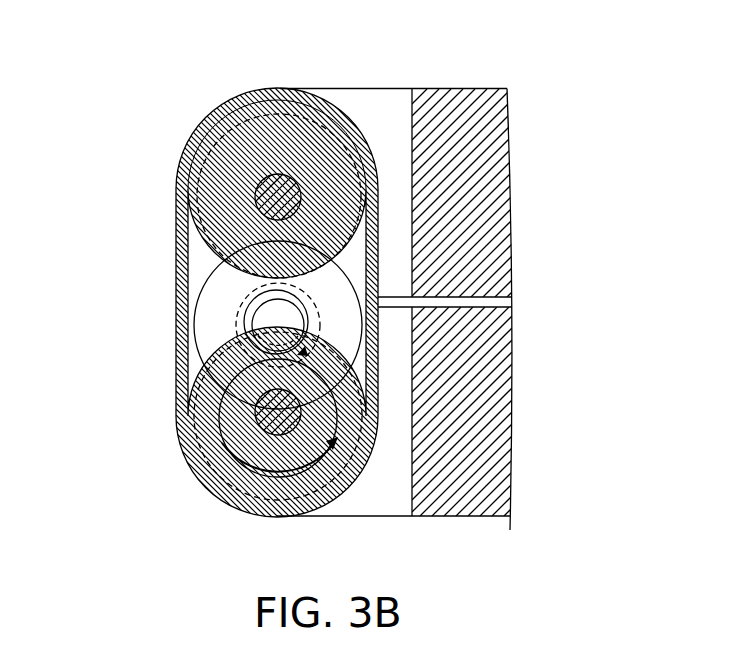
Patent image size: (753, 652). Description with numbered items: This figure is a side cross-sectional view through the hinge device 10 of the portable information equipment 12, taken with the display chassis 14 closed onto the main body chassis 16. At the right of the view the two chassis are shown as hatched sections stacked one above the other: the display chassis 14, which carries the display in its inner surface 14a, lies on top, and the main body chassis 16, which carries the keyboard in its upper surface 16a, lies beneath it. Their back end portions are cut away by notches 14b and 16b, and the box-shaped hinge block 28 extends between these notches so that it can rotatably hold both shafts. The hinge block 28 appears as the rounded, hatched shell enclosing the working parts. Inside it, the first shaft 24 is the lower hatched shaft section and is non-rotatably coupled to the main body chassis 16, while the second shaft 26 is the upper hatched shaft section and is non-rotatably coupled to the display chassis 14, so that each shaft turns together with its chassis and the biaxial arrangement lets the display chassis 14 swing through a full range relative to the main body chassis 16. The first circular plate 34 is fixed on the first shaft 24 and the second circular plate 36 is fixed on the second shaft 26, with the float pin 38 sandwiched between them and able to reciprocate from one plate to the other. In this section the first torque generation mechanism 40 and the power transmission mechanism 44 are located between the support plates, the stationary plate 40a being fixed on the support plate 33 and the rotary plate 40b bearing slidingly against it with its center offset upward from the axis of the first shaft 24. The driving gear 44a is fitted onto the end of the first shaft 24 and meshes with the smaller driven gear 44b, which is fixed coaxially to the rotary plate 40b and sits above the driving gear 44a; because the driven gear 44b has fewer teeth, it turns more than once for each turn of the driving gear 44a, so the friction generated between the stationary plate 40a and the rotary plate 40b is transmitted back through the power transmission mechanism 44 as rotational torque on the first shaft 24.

The hinge device 10 is at (246, 68).
The portable information equipment 12 is at (119, 32).
The display chassis 14 is at (457, 84).
The inner surface 14a is at (470, 300).
The notch 14b is at (386, 112).
The main body chassis 16 is at (456, 522).
The upper surface 16a is at (460, 305).
The notch 16b is at (372, 497).
The first shaft 24 is at (278, 430).
The second shaft 26 is at (278, 174).
The hinge block 28 is at (337, 118).
The support plate 33 is at (203, 258).
The first circular plate 34 is at (205, 450).
The second circular plate 36 is at (221, 106).
The float pin 38 is at (236, 283).
The first torque generation mechanism 40 is at (226, 220).
The stationary plate 40a is at (278, 416).
The rotary plate 40b is at (198, 350).
The power transmission mechanism 44 is at (220, 381).
The driving gear 44a is at (218, 422).
The driven gear 44b is at (245, 308).